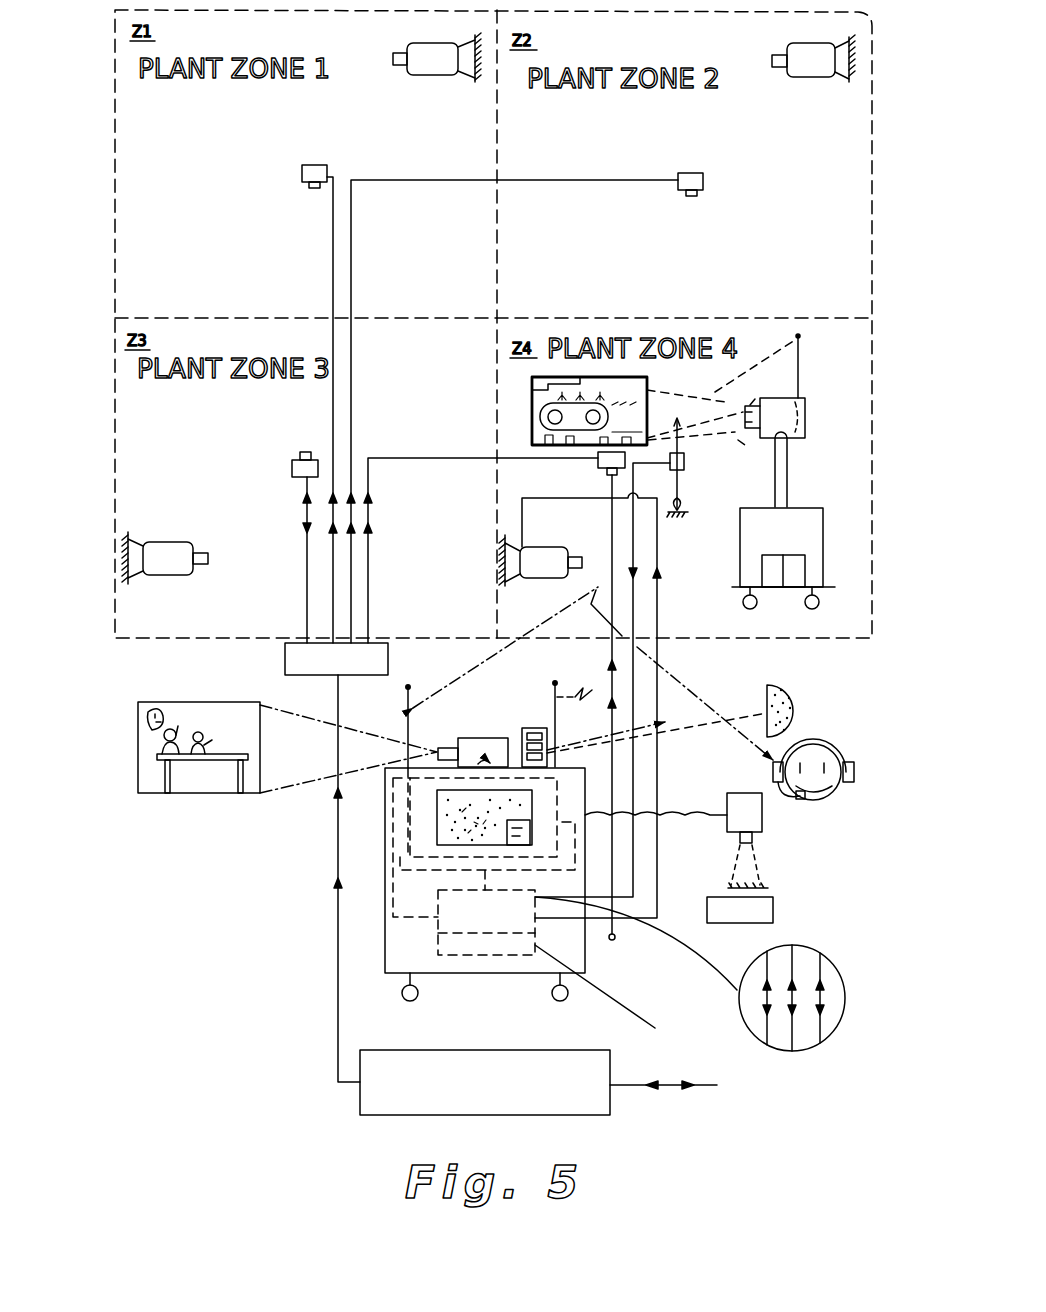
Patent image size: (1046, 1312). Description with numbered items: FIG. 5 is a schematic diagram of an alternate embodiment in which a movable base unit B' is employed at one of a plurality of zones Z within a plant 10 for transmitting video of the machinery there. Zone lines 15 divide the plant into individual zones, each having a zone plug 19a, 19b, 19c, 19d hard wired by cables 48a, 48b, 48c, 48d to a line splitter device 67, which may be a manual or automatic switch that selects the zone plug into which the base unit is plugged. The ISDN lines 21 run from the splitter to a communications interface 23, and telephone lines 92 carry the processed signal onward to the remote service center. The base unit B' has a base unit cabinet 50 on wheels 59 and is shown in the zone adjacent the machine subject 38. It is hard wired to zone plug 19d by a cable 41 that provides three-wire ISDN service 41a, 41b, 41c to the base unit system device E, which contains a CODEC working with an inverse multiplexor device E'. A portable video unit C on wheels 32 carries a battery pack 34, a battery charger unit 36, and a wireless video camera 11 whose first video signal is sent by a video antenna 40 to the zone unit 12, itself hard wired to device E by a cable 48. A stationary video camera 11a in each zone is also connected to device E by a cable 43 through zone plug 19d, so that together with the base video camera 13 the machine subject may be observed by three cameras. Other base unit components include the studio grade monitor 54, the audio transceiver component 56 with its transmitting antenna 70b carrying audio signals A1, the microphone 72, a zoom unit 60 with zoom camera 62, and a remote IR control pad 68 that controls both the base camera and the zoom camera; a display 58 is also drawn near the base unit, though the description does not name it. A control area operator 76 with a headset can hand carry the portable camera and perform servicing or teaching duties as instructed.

The plant 10 is at (108, 432).
The wireless video camera 11 is at (807, 420).
The stationary video camera 11a is at (450, 75).
The zone unit 12 is at (690, 452).
The base video camera 13 is at (470, 737).
The zone lines 15 is at (210, 315).
The zone plug 19a is at (313, 165).
The zone plug 19b is at (695, 173).
The zone plug 19c is at (290, 463).
The zone plug 19d is at (597, 465).
The ISDN lines 21 is at (333, 813).
The communications interface 23 is at (482, 1048).
The wheels 32 is at (743, 603).
The battery pack 34 is at (805, 572).
The battery charger unit 36 is at (780, 552).
The machine subject 38 is at (608, 377).
The video antenna 40 is at (800, 373).
The cable 41 is at (592, 684).
The ISDN service wire 41a is at (830, 960).
The ISDN service wire 41b is at (795, 952).
The ISDN service wire 41c is at (765, 970).
The cable 43 is at (522, 512).
The cable 48 is at (635, 535).
The cable 48a is at (333, 295).
The cable 48b is at (533, 182).
The cable 48c is at (305, 600).
The cable 48d is at (470, 458).
The base unit cabinet 50 is at (383, 903).
The studio grade monitor 54 is at (433, 827).
The audio transceiver component 56 is at (400, 865).
The monitor 58 is at (133, 747).
The wheels 59 is at (418, 994).
The zoom unit 60 is at (772, 872).
The zoom camera 62 is at (762, 822).
The line splitter device 67 is at (285, 657).
The remote IR control pad 68 is at (800, 700).
The transmitting antenna 70b is at (550, 755).
The microphone 72 is at (537, 728).
The control area operator 76 is at (843, 753).
The telephone lines 92 is at (672, 1080).
The audio signals A1 is at (725, 655).
The portable video unit C is at (815, 477).
The system device E is at (663, 952).
The inverse multiplexor device E' is at (606, 995).
The base unit B' is at (298, 991).
The zones Z is at (875, 164).